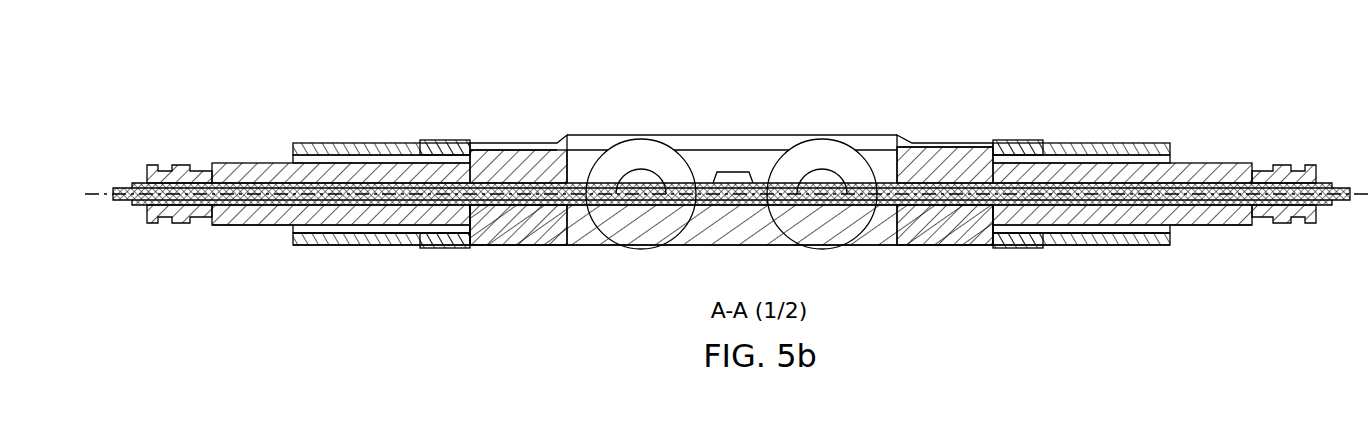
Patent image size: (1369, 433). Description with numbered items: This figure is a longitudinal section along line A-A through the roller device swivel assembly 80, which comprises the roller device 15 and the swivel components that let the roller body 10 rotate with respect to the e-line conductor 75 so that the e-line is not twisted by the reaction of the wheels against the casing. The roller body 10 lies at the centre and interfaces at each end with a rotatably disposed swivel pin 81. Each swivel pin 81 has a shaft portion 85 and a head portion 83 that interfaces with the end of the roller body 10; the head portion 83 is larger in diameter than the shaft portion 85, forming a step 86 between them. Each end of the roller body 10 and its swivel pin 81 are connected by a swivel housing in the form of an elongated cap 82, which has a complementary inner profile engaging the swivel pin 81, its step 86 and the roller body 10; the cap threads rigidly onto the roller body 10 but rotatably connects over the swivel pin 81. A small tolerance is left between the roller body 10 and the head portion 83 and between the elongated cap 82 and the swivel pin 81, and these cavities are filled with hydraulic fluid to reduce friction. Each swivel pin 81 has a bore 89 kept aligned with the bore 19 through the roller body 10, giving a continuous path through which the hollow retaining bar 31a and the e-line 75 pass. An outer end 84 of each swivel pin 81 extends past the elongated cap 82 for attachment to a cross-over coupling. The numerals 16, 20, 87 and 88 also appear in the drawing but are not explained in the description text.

The roller body 10 is at (680, 245).
The roller device 15 is at (870, 92).
The housing end portion 16 is at (507, 247).
The bore 19 is at (752, 150).
The spherical element 20 is at (651, 150).
The hollow retaining bar 31a is at (464, 247).
The e-line conductor 75 is at (1348, 185).
The roller device swivel assembly 80 is at (972, 92).
The swivel pin 81 is at (258, 163).
The elongated cap 82 is at (434, 141).
The head portion 83 is at (398, 143).
The outer end 84 is at (182, 223).
The shaft portion 85 is at (276, 163).
The step 86 is at (372, 247).
The end block 87 is at (483, 143).
The sleeve layer 88 is at (312, 247).
The swivel pin bore 89 is at (247, 225).